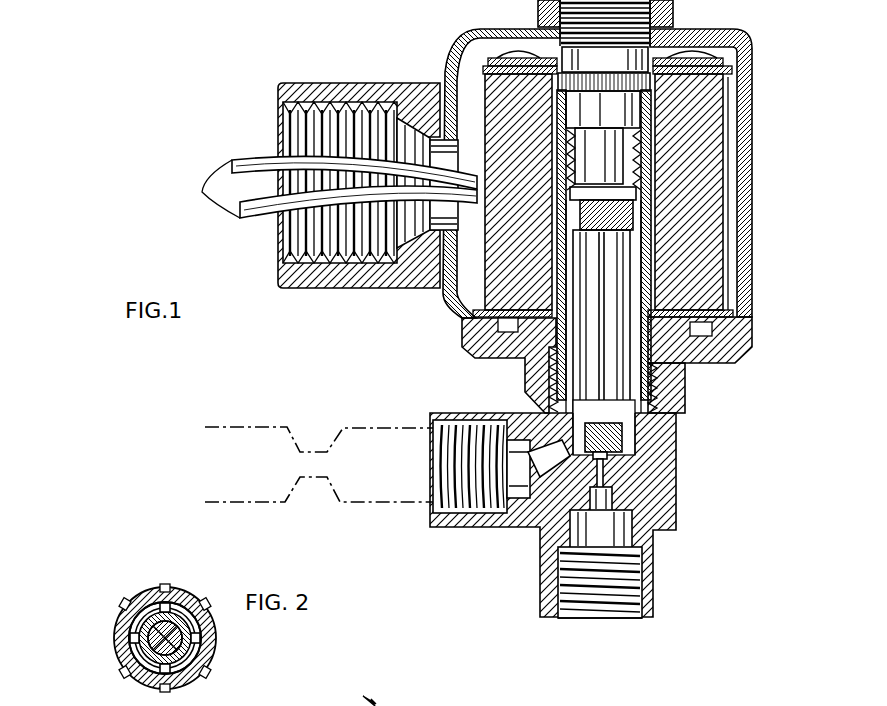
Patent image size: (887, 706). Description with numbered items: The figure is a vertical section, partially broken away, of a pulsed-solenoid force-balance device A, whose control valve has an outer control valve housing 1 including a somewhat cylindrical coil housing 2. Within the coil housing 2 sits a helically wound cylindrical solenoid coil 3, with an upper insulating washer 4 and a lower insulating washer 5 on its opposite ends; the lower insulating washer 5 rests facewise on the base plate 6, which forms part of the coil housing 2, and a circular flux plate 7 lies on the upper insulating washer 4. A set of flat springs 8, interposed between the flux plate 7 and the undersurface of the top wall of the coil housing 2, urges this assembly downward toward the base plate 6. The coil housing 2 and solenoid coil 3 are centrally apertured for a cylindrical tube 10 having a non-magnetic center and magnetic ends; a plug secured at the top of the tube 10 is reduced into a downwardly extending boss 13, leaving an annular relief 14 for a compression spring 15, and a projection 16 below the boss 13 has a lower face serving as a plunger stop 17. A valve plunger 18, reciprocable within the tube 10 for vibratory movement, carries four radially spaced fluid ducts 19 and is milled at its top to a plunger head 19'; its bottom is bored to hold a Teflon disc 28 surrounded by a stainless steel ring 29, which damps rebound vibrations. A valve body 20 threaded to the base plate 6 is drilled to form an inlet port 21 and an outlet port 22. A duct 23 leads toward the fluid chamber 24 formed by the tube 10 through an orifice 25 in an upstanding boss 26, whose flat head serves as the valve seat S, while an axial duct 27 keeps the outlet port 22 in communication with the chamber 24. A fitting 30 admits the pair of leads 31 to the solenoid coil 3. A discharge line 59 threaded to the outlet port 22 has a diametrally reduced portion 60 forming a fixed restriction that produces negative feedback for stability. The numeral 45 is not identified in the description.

In FIG. 1, the outer control valve housing 1 is at (445, 60).
In FIG. 1, the coil housing 2 is at (752, 306).
In FIG. 1, the force-balance device A is at (753, 34).
In FIG. 1, the solenoid coil 3 is at (649, 135).
In FIG. 1, the upper insulating washer 4 is at (726, 75).
In FIG. 1, the lower insulating washer 5 is at (733, 314).
In FIG. 1, the base plate 6 is at (752, 346).
In FIG. 1, the flux plate 7 is at (723, 62).
In FIG. 1, the flat springs 8 is at (700, 33).
In FIG. 1, the cylindrical tube 10 is at (620, 292).
In FIG. 1, the boss 13 is at (640, 172).
In FIG. 1, the annular relief 14 is at (640, 155).
In FIG. 1, the compression spring 15 is at (636, 192).
In FIG. 1, the projection 16 is at (636, 212).
In FIG. 1, the plunger stop 17 is at (630, 232).
In FIG. 1, the valve plunger 18 is at (618, 280).
In FIG. 2, the valve plunger 18 is at (190, 655).
In FIG. 1, the fluid ducts 19 is at (685, 317).
In FIG. 2, the fluid ducts 19 is at (169, 613).
In FIG. 1, the plunger head 19' is at (691, 221).
In FIG. 1, the valve body 20 is at (655, 562).
In FIG. 2, the valve body 20 is at (180, 688).
In FIG. 1, the inlet port 21 is at (617, 620).
In FIG. 1, the outlet port 22 is at (433, 497).
In FIG. 1, the duct 23 is at (612, 500).
In FIG. 1, the fluid chamber 24 is at (685, 373).
In FIG. 2, the fluid chamber 24 is at (136, 655).
In FIG. 1, the orifice 25 is at (604, 474).
In FIG. 1, the upstanding boss 26 is at (607, 457).
In FIG. 1, the axial duct 27 is at (553, 488).
In FIG. 2, the disc 28 is at (136, 612).
In FIG. 2, the stainless steel ring 29 is at (176, 624).
In FIG. 1, the fitting 30 is at (352, 83).
In FIG. 1, the leads 31 is at (205, 192).
In FIG. 1, the arrow 45 is at (410, 705).
In FIG. 1, the discharge line 59 is at (383, 428).
In FIG. 1, the diametrally reduced portion 60 is at (315, 477).
In FIG. 1, the valve seat S is at (622, 432).